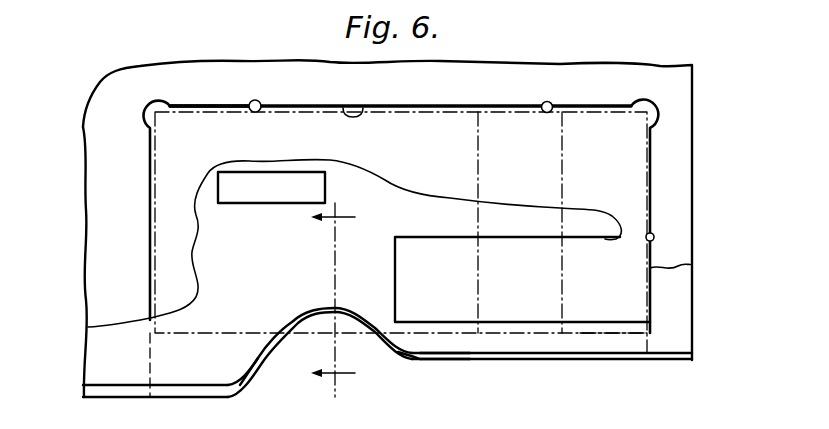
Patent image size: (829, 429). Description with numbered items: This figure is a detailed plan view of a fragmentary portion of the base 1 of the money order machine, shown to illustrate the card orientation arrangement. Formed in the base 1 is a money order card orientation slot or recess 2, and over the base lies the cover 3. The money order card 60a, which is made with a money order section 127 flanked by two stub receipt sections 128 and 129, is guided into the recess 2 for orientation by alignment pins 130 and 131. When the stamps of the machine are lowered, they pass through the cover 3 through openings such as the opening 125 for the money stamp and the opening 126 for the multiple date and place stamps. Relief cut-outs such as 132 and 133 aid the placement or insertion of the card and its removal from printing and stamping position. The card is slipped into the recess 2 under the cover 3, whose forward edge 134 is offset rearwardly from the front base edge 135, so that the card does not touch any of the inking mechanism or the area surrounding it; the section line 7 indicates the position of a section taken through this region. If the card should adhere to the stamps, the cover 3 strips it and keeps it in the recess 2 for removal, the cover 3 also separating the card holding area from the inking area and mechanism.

The base 1 is at (98, 200).
The money order card orientation slot or recess 2 is at (387, 253).
The cover 3 is at (375, 185).
The section line 7- 7 is at (339, 300).
The money order card 60a is at (192, 100).
The opening for the money stamp 125 is at (233, 204).
The opening for the multiple date and place stamps 126 is at (450, 237).
The money order section 127 is at (442, 329).
The stub receipt section 128 is at (526, 329).
The stub receipt section 129 is at (613, 331).
The alignment pin 130 is at (258, 111).
The alignment pin 131 is at (655, 237).
The relief cut-out 132 is at (289, 339).
The relief cut-out 133 is at (289, 321).
The forward edge of the cover 134 is at (417, 361).
The front base edge 135 is at (437, 363).